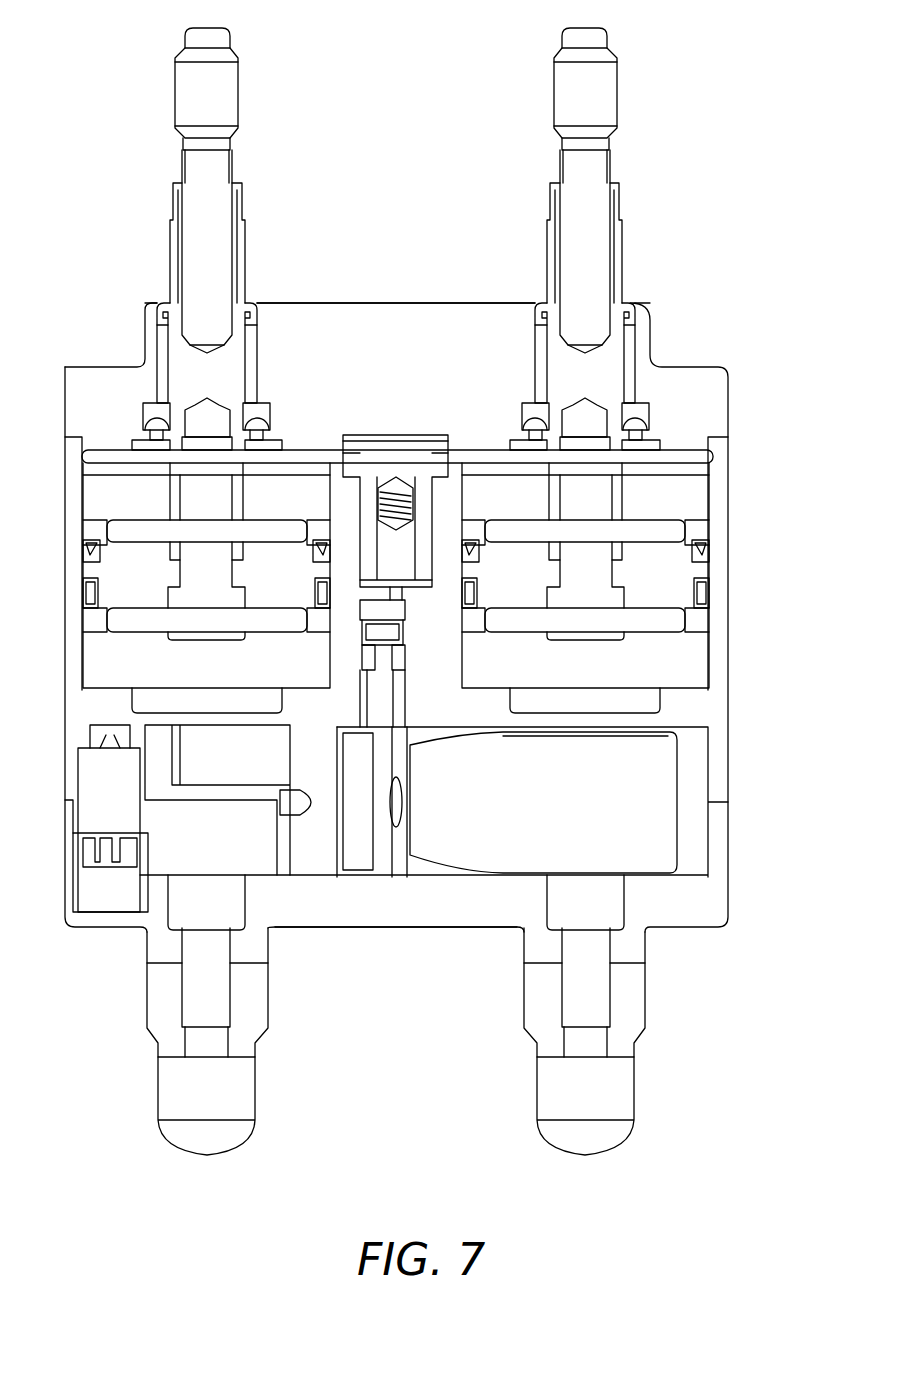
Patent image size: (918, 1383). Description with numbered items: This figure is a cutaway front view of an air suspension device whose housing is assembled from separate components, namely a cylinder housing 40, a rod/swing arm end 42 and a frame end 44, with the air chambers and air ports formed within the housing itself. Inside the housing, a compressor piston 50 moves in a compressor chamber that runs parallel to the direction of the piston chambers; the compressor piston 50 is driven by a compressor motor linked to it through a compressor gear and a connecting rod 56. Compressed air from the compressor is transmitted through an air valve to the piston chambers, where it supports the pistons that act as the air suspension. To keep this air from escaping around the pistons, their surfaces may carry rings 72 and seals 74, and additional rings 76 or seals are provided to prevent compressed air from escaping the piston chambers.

The cylinder housing 40 is at (722, 502).
The rod/swing arm end 42 is at (409, 300).
The frame end 44 is at (395, 930).
The compressor piston 50 is at (382, 658).
The connecting rod 56 is at (383, 735).
The rings 72 is at (703, 593).
The seals 74 is at (698, 557).
The rings 76 is at (687, 457).